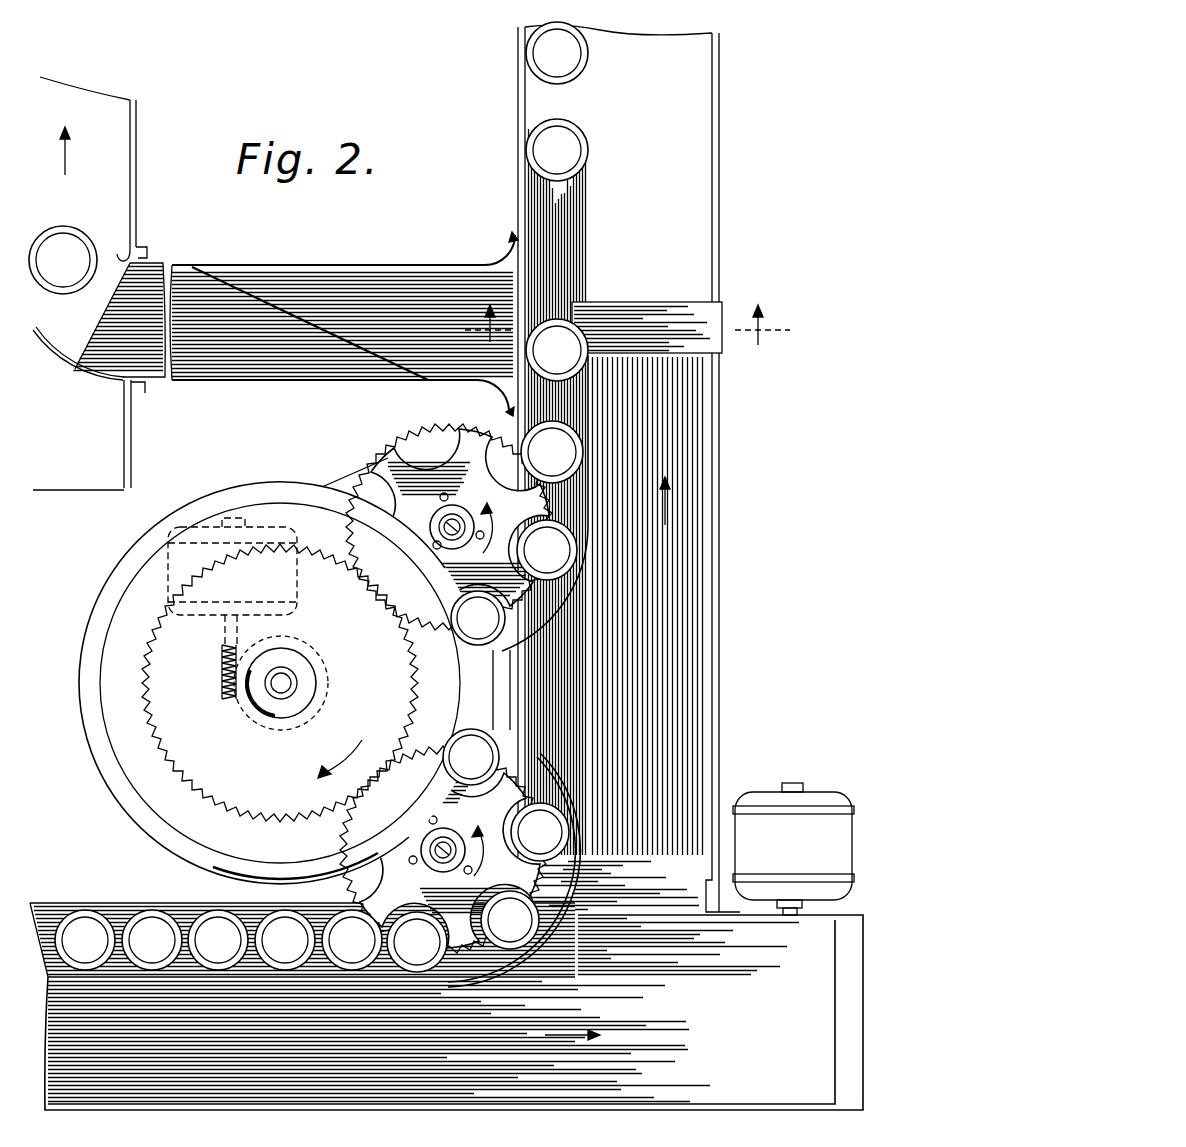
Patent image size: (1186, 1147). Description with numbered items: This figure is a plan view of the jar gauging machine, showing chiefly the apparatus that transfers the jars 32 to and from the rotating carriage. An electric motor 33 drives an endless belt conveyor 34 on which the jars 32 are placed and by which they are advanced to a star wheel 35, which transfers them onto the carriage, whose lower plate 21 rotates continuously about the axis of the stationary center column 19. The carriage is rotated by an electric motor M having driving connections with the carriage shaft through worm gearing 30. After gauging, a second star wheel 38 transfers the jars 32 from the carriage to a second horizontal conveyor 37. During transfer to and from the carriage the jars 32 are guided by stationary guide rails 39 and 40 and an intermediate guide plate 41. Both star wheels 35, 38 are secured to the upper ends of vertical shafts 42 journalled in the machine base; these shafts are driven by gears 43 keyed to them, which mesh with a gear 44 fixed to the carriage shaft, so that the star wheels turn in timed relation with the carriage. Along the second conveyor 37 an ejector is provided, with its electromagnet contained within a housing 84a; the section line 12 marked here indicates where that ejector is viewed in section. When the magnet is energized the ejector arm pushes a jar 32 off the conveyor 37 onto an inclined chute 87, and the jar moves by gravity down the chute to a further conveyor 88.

The conveyor 88 is at (133, 193).
The jars 32 is at (97, 238).
The inclined chute 87 is at (374, 273).
The housing 84a is at (693, 310).
The section line 12 is at (625, 325).
The stationary guide rail 40 is at (592, 393).
The second horizontal conveyor 37 is at (700, 408).
The star wheel 38 is at (430, 470).
The gears 43 is at (355, 485).
The electric motor M is at (205, 520).
The vertical shafts 42 is at (445, 530).
The stationary center column 19 is at (283, 682).
The worm gearing 30 is at (222, 688).
The lower plate 21 is at (80, 715).
The intermediate guide plate 41 is at (486, 690).
The gear 44 is at (218, 806).
The star wheel 35 is at (396, 843).
The electric motor 33 is at (810, 800).
The stationary guide rail 39 is at (147, 977).
The endless belt conveyor 34 is at (535, 1098).